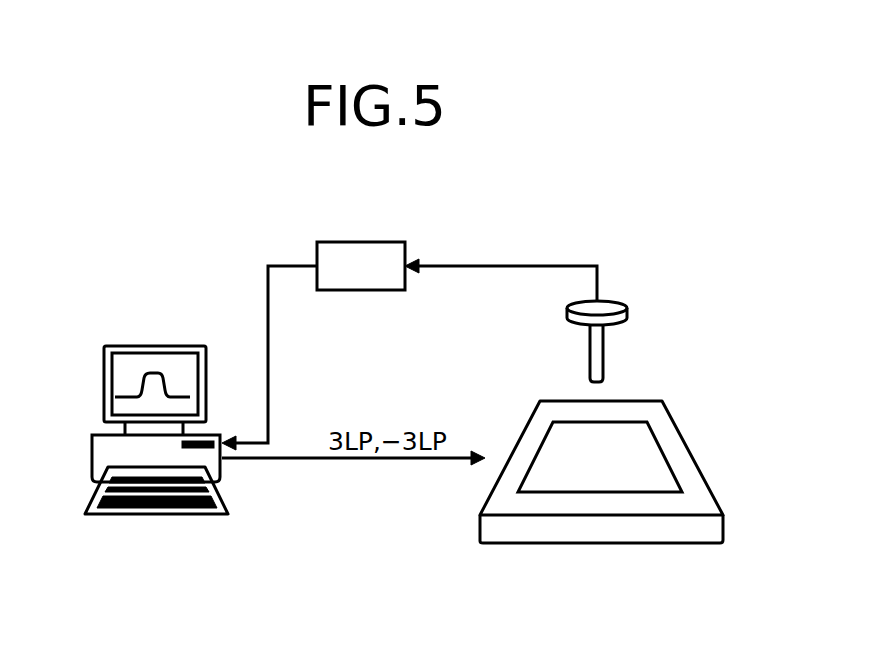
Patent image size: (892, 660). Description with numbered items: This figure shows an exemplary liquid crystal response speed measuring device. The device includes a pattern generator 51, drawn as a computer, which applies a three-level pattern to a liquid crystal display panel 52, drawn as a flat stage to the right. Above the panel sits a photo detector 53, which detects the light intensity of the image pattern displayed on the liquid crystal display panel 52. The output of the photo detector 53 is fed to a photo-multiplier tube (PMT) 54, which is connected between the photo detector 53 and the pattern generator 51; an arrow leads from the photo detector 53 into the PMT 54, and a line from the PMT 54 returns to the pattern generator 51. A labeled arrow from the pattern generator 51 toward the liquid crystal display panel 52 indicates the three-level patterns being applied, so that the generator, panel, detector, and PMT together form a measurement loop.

The pattern generator 51 is at (148, 347).
The liquid crystal display panel 52 is at (490, 512).
The photo detector 53 is at (590, 356).
The photo-multiplier tube (PMT) 54 is at (372, 242).